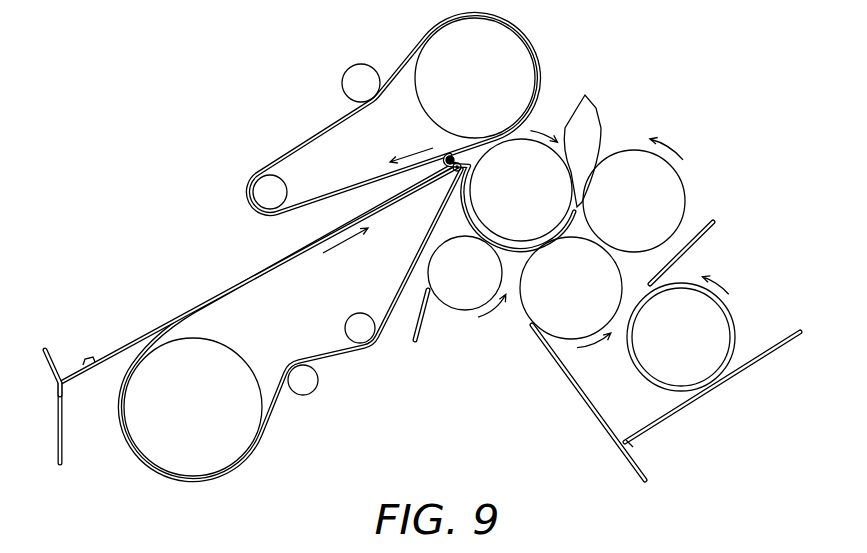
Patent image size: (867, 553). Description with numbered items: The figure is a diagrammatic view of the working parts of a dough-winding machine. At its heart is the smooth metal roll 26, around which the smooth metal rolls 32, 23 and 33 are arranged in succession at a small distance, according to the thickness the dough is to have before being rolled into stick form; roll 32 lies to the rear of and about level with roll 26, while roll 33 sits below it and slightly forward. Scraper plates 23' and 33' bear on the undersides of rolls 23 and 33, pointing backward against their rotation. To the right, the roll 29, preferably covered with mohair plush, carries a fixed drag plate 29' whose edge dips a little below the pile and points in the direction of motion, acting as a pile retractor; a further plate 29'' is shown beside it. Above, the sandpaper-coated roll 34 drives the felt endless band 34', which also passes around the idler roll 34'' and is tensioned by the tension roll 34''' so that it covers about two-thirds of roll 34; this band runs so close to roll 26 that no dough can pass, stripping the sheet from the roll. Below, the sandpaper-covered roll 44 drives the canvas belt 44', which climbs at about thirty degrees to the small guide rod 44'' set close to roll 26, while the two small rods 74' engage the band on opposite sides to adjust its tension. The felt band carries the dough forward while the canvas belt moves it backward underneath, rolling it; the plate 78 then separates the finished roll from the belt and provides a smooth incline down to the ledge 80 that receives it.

The roll 23 is at (571, 288).
The scraper plate 23' is at (578, 402).
The smooth metal roll 26 is at (521, 190).
The roll 29 is at (681, 337).
The drag plate 29' is at (692, 253).
The guide bar 29'' is at (712, 379).
The smooth metal roll 32 is at (634, 201).
The roll 33 is at (465, 273).
The scraper plate 33' is at (438, 325).
The roll 34 is at (475, 78).
The endless band 34' is at (393, 114).
The idler roll 34'' is at (246, 191).
The tension roll 34''' is at (341, 75).
The roll 44 is at (193, 407).
The canvas belt 44' is at (258, 275).
The guide rod 44'' is at (291, 322).
The small rods 74' is at (331, 354).
The plate 78 is at (57, 440).
The ledge 80 is at (62, 364).